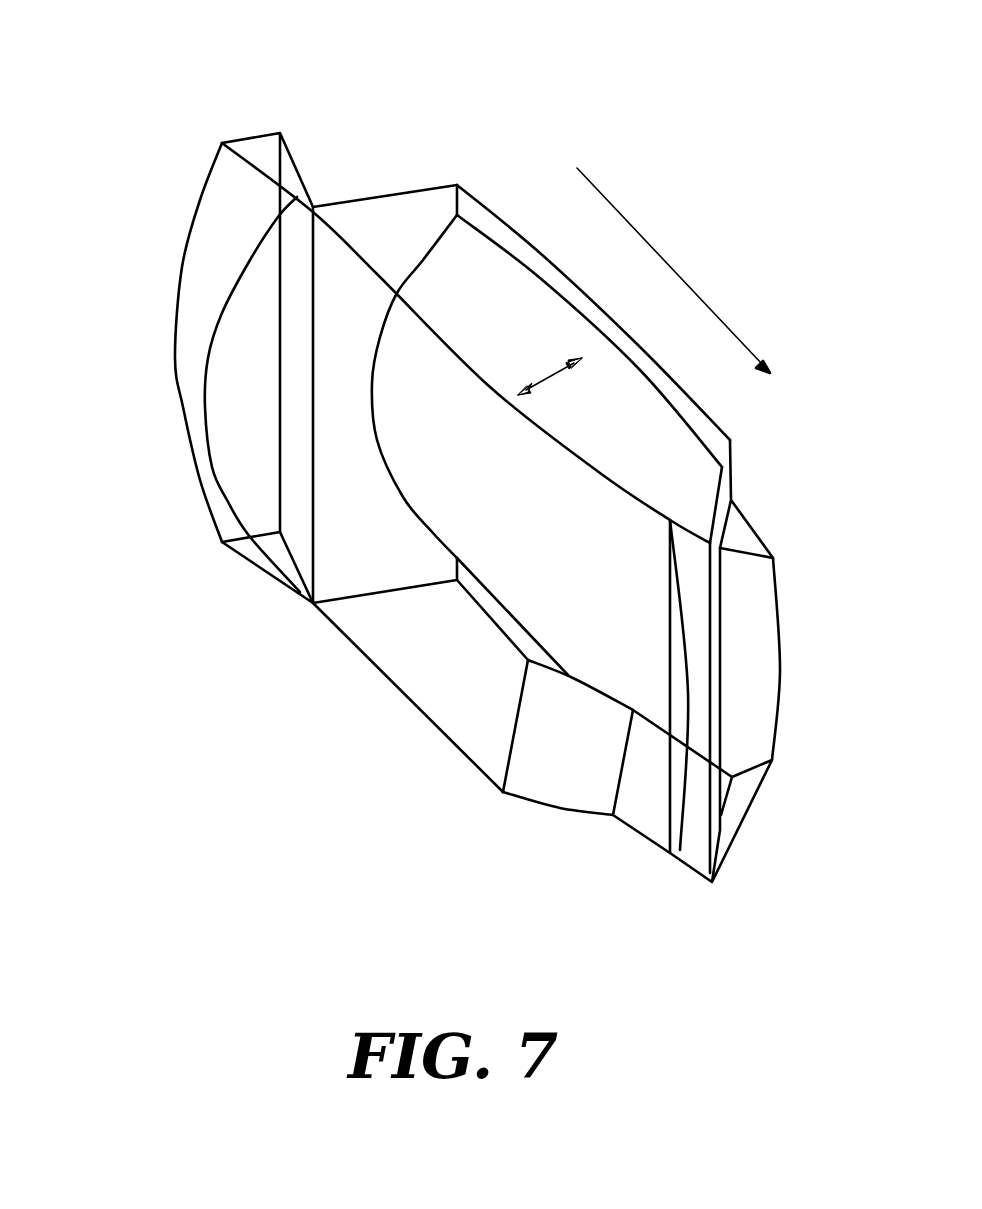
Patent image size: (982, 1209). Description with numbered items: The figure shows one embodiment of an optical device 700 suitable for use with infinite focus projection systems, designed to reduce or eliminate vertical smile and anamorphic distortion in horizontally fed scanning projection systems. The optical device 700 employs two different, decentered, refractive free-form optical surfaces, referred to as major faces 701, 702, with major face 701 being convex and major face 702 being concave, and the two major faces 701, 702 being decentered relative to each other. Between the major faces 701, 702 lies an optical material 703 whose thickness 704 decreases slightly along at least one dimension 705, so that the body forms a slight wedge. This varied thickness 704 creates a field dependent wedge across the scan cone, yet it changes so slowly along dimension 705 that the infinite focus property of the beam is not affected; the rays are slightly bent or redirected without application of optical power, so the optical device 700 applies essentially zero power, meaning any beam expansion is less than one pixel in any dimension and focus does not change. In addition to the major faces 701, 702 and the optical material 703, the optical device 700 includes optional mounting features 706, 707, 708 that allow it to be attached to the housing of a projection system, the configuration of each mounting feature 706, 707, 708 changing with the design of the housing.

The optical device 700 is at (99, 296).
The major face 701 is at (207, 370).
The major face 702 is at (417, 258).
The optical material 703 is at (467, 277).
The thickness 704 is at (552, 375).
The dimension 705 is at (648, 247).
The mounting feature 706 is at (515, 722).
The mounting feature 707 is at (262, 143).
The mounting feature 708 is at (723, 692).